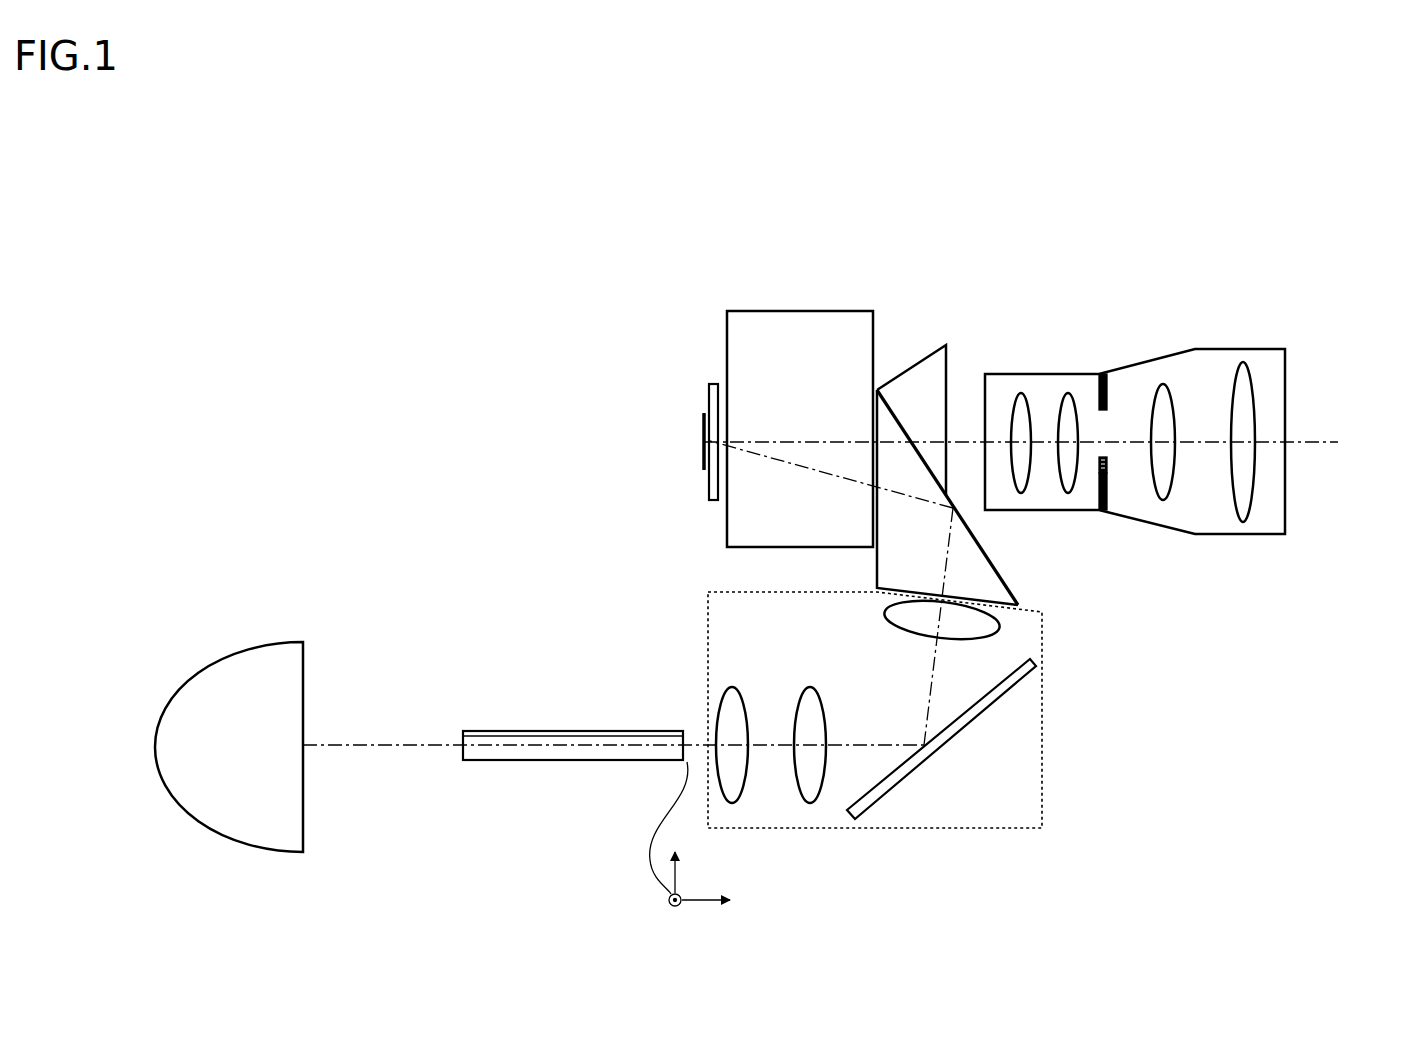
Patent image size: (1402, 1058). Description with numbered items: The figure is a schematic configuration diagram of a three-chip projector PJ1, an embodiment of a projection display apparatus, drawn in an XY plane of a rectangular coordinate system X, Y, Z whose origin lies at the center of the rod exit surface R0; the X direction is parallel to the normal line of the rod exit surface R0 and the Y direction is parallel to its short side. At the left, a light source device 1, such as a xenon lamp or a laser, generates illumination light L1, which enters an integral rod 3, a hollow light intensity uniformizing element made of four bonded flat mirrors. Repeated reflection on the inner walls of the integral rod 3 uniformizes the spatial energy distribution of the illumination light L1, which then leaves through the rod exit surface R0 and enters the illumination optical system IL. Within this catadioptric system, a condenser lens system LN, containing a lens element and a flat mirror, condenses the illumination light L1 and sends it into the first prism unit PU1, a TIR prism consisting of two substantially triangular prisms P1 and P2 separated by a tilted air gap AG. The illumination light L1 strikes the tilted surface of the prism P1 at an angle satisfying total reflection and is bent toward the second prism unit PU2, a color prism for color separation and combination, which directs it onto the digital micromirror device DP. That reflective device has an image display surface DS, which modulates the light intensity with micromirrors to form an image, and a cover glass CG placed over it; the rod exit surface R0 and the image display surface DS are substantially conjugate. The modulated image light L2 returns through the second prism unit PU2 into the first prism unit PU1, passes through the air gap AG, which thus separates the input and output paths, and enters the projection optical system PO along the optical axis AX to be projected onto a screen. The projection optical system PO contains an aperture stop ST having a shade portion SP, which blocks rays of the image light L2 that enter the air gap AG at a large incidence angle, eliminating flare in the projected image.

The 3-chip projector PJ1 is at (143, 168).
The illumination optical system IL is at (978, 220).
The projection optical system PO is at (983, 220).
The second prism unit PU2 is at (723, 278).
The first prism unit PU1 is at (978, 278).
The air gap AG is at (884, 400).
The image light L2 is at (963, 438).
The aperture stop ST is at (1106, 392).
The digital micromirror device DP is at (655, 421).
The image display surface DS is at (703, 455).
The cover glass CG is at (708, 488).
The prism P2 is at (903, 424).
The prism P1 is at (929, 582).
The optical axis AX is at (1044, 442).
The shade portion SP is at (1108, 470).
The illumination light L1 is at (696, 738).
The rod exit surface R0 is at (696, 740).
The condenser lens system LN is at (900, 828).
The integral rod 3 is at (563, 762).
The light source device 1 is at (303, 822).
The X direction X is at (723, 901).
The Y direction Y is at (674, 855).
The Z direction Z is at (662, 903).